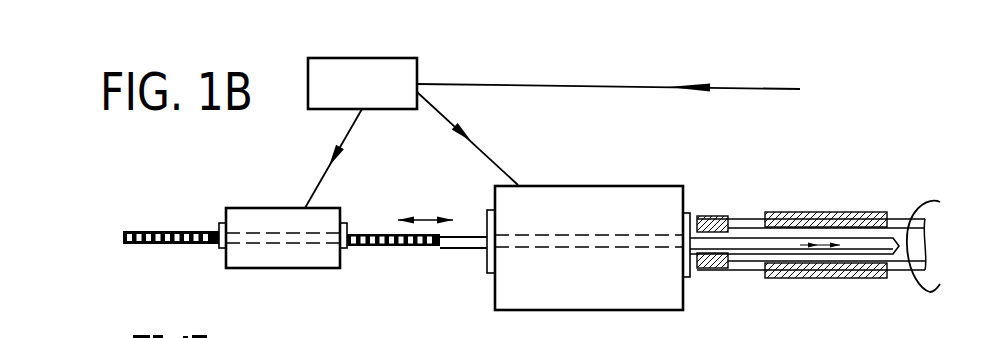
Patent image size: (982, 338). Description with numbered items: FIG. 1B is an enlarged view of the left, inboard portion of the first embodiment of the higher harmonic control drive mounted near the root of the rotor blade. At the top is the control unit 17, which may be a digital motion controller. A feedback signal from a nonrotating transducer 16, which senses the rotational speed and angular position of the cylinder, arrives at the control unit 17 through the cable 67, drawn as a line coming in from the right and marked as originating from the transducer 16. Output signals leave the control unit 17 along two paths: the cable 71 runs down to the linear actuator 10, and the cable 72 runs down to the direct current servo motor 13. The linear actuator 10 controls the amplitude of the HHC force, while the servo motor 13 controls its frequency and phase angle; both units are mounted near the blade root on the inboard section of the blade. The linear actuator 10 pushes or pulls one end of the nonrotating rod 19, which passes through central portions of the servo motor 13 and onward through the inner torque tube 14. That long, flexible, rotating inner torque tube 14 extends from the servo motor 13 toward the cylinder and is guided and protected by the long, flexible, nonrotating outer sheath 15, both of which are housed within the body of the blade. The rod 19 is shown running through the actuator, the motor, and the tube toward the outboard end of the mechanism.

The linear actuator 10 is at (283, 208).
The servo motor 13 is at (548, 186).
The inner torque tube 14 is at (757, 218).
The outer sheath 15 is at (832, 212).
The nonrotating transducer 16 is at (863, 89).
The control unit 17 is at (385, 58).
The nonrotating rod 19 is at (382, 233).
The cable 67 is at (573, 86).
The cable 71 is at (363, 111).
The cable 72 is at (489, 157).